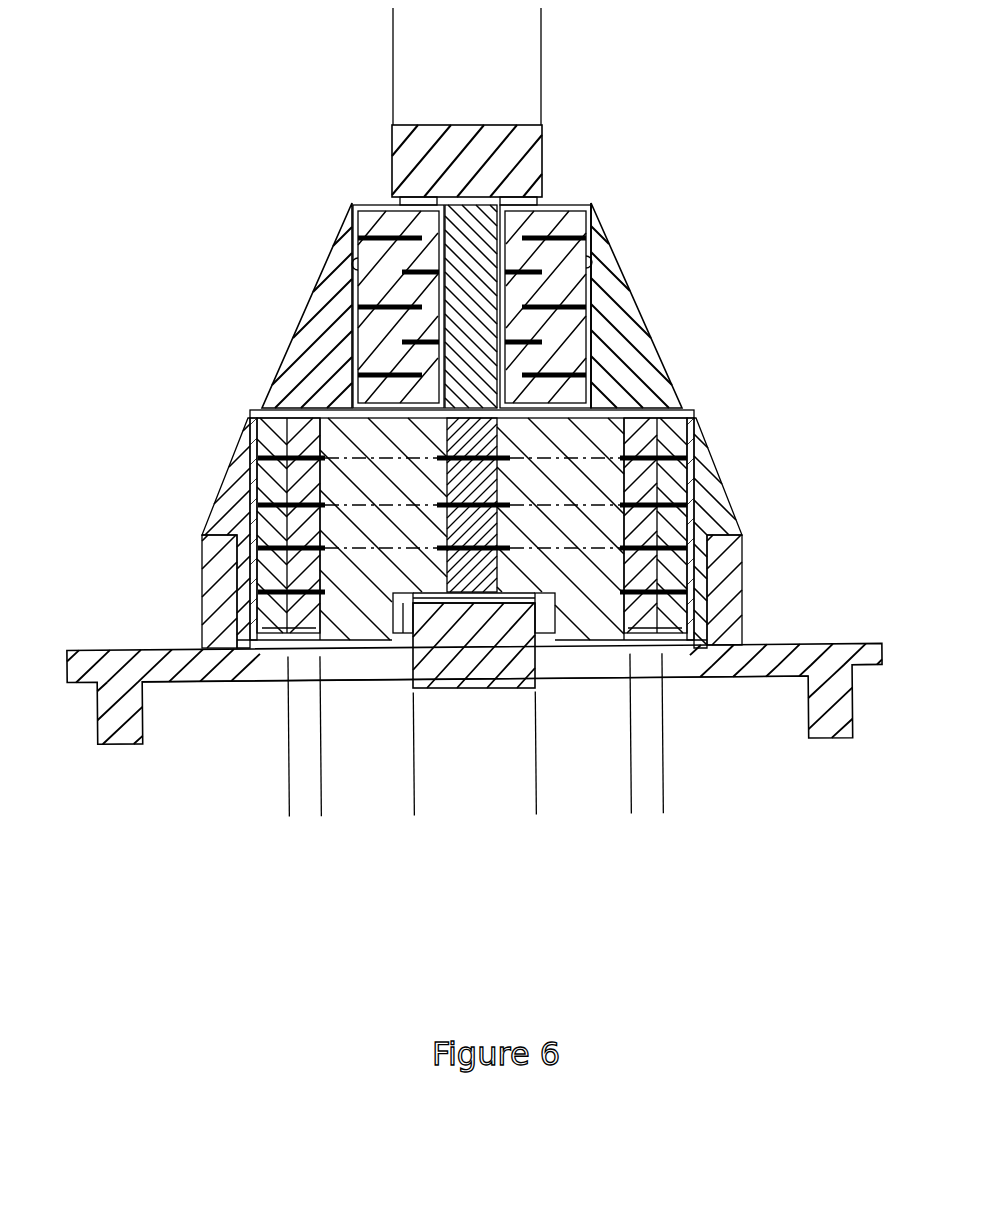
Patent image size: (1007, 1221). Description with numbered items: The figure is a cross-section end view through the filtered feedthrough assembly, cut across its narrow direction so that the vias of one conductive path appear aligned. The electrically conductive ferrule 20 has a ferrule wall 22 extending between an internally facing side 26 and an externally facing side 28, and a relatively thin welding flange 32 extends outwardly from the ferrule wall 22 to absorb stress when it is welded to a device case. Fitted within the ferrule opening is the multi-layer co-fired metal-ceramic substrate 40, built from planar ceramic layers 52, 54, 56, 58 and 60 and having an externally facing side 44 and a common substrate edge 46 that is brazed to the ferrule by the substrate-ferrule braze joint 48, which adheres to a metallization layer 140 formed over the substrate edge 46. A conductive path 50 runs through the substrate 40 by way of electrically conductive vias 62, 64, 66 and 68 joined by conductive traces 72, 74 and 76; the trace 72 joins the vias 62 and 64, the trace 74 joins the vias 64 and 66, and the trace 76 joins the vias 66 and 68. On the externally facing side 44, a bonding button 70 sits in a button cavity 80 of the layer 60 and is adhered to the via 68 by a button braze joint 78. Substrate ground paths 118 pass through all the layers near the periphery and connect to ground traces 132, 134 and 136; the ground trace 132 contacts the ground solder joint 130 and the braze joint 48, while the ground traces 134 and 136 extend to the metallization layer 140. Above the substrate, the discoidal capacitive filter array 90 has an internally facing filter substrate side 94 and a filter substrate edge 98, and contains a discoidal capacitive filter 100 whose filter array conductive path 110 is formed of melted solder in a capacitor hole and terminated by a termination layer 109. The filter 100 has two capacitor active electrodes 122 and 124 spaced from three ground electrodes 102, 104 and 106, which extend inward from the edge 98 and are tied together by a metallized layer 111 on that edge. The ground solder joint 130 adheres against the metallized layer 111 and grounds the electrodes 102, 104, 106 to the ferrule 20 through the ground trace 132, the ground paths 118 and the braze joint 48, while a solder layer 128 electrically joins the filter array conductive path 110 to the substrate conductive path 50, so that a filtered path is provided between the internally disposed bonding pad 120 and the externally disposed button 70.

The electrically conductive ferrule 20 is at (830, 345).
The ferrule wall 22 is at (735, 648).
The internally facing side 26 is at (745, 523).
The externally facing side 28 is at (832, 742).
The welding flange 32 is at (858, 676).
The co-fired metal-ceramic substrate 40 is at (365, 443).
The externally facing side 44 is at (510, 458).
The common substrate edge 46 is at (690, 425).
The substrate-ferrule braze joint 48 is at (730, 446).
The conductive path 50 is at (413, 805).
The ceramic layer 52 is at (252, 421).
The ceramic layer 54 is at (245, 470).
The ceramic layer 56 is at (222, 503).
The ceramic layer 58 is at (200, 572).
The ceramic layer 60 is at (205, 600).
The electrically conductive via 62 is at (435, 437).
The electrically conductive via 64 is at (445, 518).
The electrically conductive via 66 is at (507, 505).
The electrically conductive via 68 is at (533, 580).
The bonding button 70 is at (474, 700).
The electrically conductive trace 72 is at (442, 483).
The electrically conductive trace 74 is at (443, 553).
The electrically conductive trace 76 is at (522, 525).
The button braze joint 78 is at (545, 625).
The button cavity 80 is at (407, 625).
The discoidal capacitive filter array 90 is at (378, 397).
The internally facing filter substrate side 94 is at (375, 200).
The filter substrate edge 98 is at (352, 272).
The discoidal capacitive filter 100 is at (541, 17).
The capacitor ground electrode 102 is at (352, 212).
The capacitor ground electrode 104 is at (352, 300).
The capacitor ground electrode 106 is at (352, 360).
The termination layer 109 is at (352, 340).
The filter array conductive path 110 is at (476, 190).
The metallized layer 111 is at (352, 240).
The substrate ground path 118 is at (352, 805).
The internally disposed bonding pad 120 is at (431, 115).
The capacitor active electrode 122 is at (588, 205).
The capacitor active electrode 124 is at (592, 330).
The solder layer 128 is at (612, 393).
The ground solder joint 130 is at (612, 240).
The ground trace 132 is at (262, 410).
The ground trace 134 is at (200, 532).
The ground trace 136 is at (202, 637).
The metallization layer 140 is at (700, 478).